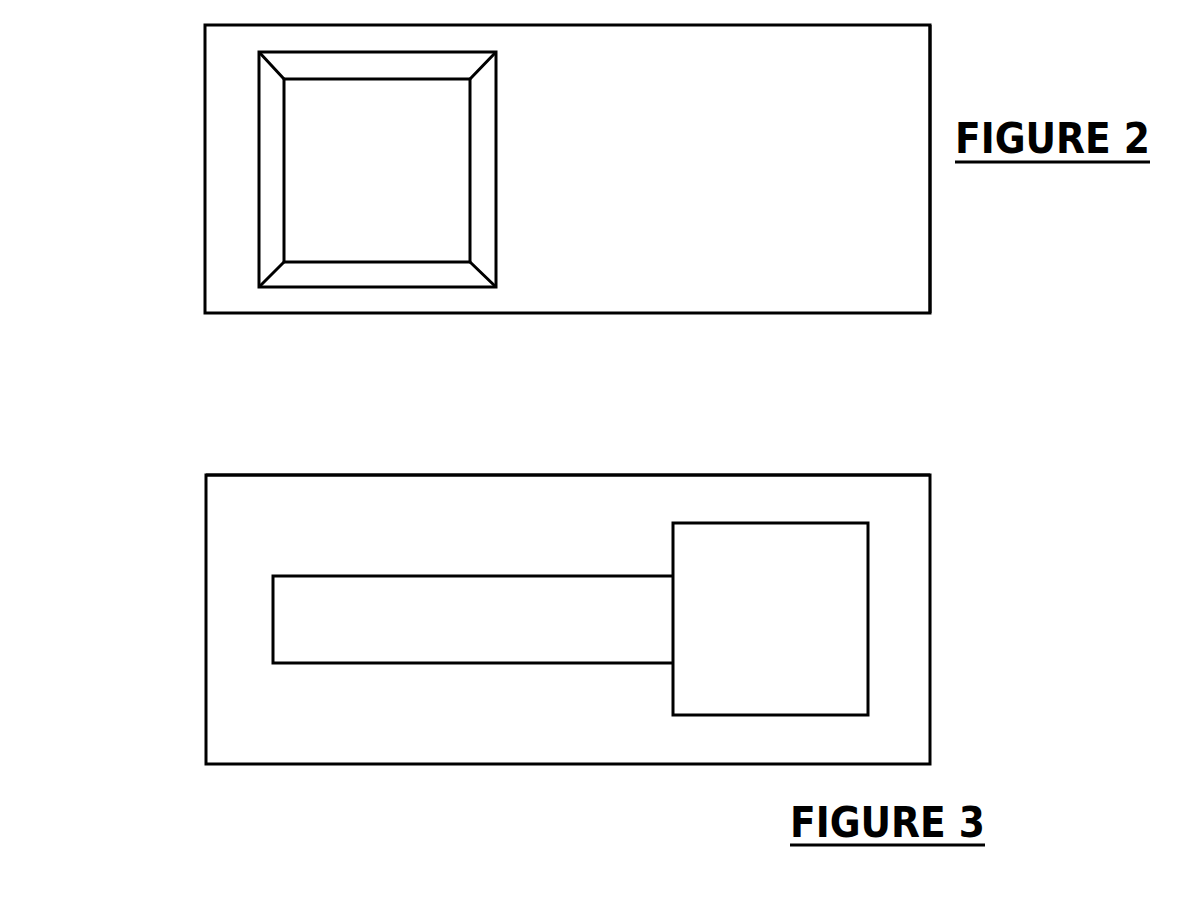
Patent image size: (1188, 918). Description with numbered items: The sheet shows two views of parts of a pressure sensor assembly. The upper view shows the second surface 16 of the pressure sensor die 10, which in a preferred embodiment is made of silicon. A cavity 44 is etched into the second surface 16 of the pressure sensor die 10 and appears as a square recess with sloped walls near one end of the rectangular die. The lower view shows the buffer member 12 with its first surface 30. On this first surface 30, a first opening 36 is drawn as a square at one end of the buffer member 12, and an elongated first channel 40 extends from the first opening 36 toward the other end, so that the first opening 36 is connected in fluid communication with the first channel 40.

In FIG. 2, the pressure sensor die 10 is at (220, 227).
In FIG. 2, the second surface 16 is at (833, 268).
In FIG. 2, the cavity 44 is at (305, 190).
In FIG. 3, the buffer member 12 is at (205, 714).
In FIG. 3, the first surface 30 is at (581, 527).
In FIG. 3, the first channel 40 is at (316, 595).
In FIG. 3, the first opening 36 is at (840, 600).